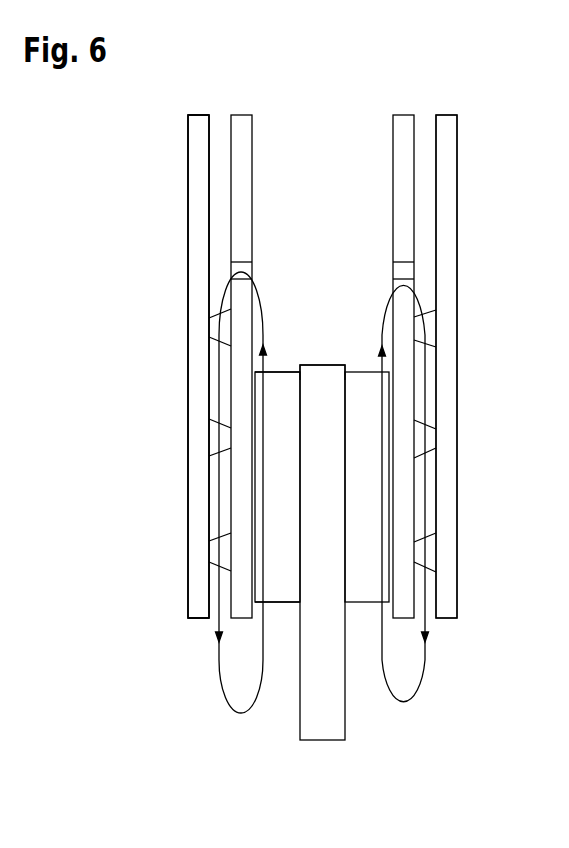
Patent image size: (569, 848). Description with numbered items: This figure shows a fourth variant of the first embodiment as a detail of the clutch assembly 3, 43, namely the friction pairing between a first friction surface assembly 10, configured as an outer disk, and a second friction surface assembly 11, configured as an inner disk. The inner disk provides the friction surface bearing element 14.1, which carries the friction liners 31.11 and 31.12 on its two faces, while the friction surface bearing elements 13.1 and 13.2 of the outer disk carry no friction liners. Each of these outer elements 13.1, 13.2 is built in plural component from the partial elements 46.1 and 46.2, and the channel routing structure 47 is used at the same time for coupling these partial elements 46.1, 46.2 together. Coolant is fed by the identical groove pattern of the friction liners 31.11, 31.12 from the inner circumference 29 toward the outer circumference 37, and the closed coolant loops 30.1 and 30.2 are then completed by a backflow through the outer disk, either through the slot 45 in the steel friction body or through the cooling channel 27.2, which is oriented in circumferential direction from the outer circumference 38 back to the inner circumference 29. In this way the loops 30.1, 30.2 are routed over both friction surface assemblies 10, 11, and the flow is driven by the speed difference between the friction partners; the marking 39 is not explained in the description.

The electric machine 3 is at (353, 79).
The claw-pole rotor 43 is at (325, 113).
The first friction surface assembly 10 is at (186, 143).
The second friction surface assembly 11 is at (323, 722).
The friction surface bearing element 13.1 is at (198, 181).
The friction surface bearing element 13.2 is at (452, 181).
The friction surface bearing element 14.1 is at (330, 380).
The cooling channel 27.2 is at (218, 413).
The inner circumference 29 is at (270, 605).
The coolant loop 30.1 is at (233, 706).
The coolant loop 30.2 is at (424, 690).
The friction liner 31.11 is at (275, 588).
The friction liner 31.12 is at (365, 580).
The outer circumference 37 is at (282, 371).
The outer circumference 38 is at (195, 113).
The opposite end face 39 is at (200, 626).
The slot 45 is at (218, 283).
The partial element 46.1 is at (198, 222).
The partial element 46.2 is at (395, 222).
The channel routing structure 47 is at (198, 374).